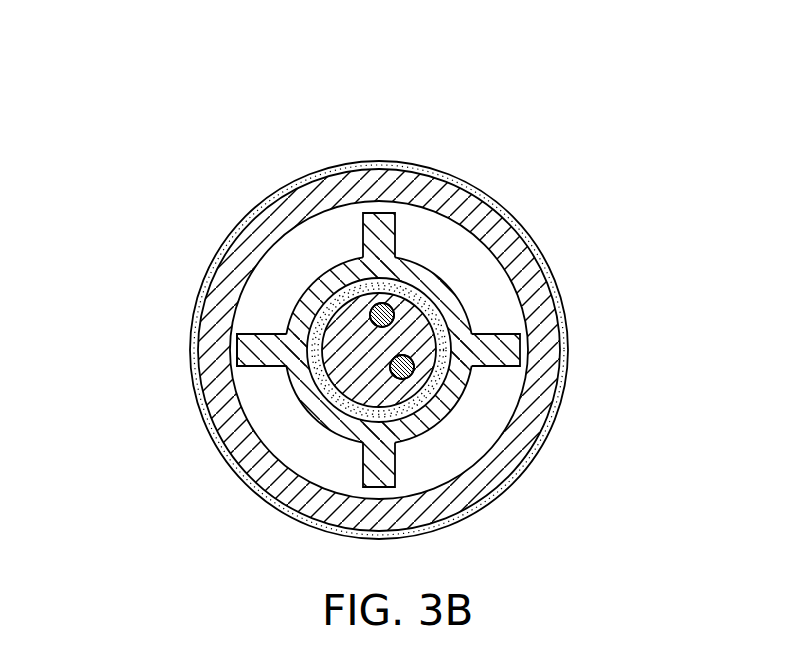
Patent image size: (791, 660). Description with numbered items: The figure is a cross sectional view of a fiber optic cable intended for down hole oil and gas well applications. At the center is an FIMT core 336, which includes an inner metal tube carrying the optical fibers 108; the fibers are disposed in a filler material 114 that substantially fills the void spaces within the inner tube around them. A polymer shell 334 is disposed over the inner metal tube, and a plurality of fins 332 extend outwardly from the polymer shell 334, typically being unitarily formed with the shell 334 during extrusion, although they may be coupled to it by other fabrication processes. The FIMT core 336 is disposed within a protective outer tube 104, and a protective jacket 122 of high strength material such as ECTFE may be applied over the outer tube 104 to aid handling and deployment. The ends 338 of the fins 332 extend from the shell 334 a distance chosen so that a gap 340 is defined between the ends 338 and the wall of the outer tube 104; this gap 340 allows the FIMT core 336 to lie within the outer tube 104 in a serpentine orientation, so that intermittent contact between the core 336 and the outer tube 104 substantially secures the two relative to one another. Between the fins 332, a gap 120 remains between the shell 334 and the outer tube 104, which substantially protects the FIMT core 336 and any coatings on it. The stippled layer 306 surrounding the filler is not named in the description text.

The outer tube 104 is at (506, 223).
The optical fibers 108 is at (408, 378).
The filler material 114 is at (413, 328).
The gap 120 is at (504, 401).
The protective jacket 122 is at (470, 204).
The insulating layer 306 is at (338, 406).
The fins 332 is at (252, 368).
The polymer shell 334 is at (406, 408).
The FIMT core 336 is at (293, 273).
The ends 338 is at (234, 334).
The gap 340 is at (399, 199).